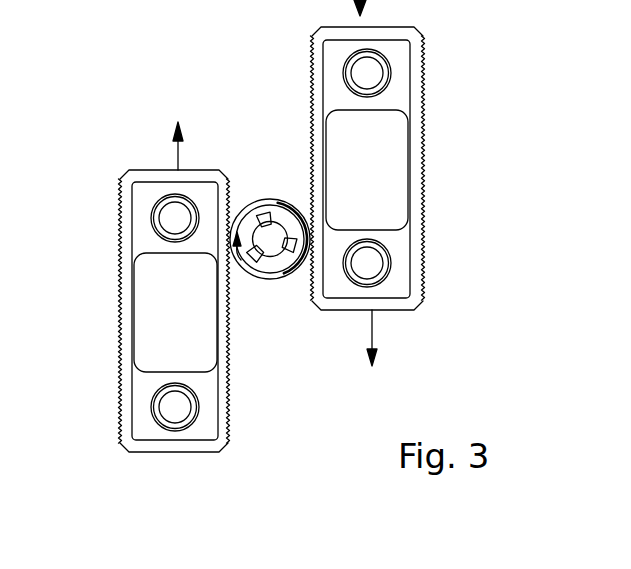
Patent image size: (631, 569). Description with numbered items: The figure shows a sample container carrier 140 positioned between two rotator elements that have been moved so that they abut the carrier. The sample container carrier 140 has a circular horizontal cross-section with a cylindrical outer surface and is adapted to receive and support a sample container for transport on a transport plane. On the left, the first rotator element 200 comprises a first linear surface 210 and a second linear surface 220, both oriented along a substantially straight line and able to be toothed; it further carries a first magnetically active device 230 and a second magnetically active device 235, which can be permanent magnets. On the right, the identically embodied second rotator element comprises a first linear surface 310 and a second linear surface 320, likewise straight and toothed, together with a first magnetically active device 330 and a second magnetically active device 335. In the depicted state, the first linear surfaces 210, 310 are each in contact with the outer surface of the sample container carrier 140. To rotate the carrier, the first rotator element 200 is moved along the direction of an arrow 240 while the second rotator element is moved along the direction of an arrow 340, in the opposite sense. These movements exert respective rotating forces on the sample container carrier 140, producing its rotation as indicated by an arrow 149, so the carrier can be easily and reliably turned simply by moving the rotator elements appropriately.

The first rotator element 200 is at (254, 470).
The first linear surface 210 is at (231, 433).
The second linear surface 220 is at (122, 318).
The first magnetically active device 230 is at (173, 405).
The second magnetically active device 235 is at (172, 219).
The arrow 240 is at (179, 157).
The first linear surface 310 is at (312, 60).
The second linear surface 320 is at (422, 177).
The first magnetically active device 330 is at (369, 263).
The second magnetically active device 335 is at (369, 73).
The arrow 340 is at (373, 335).
The sample container carrier 140 is at (284, 277).
The arrow 149 is at (289, 202).